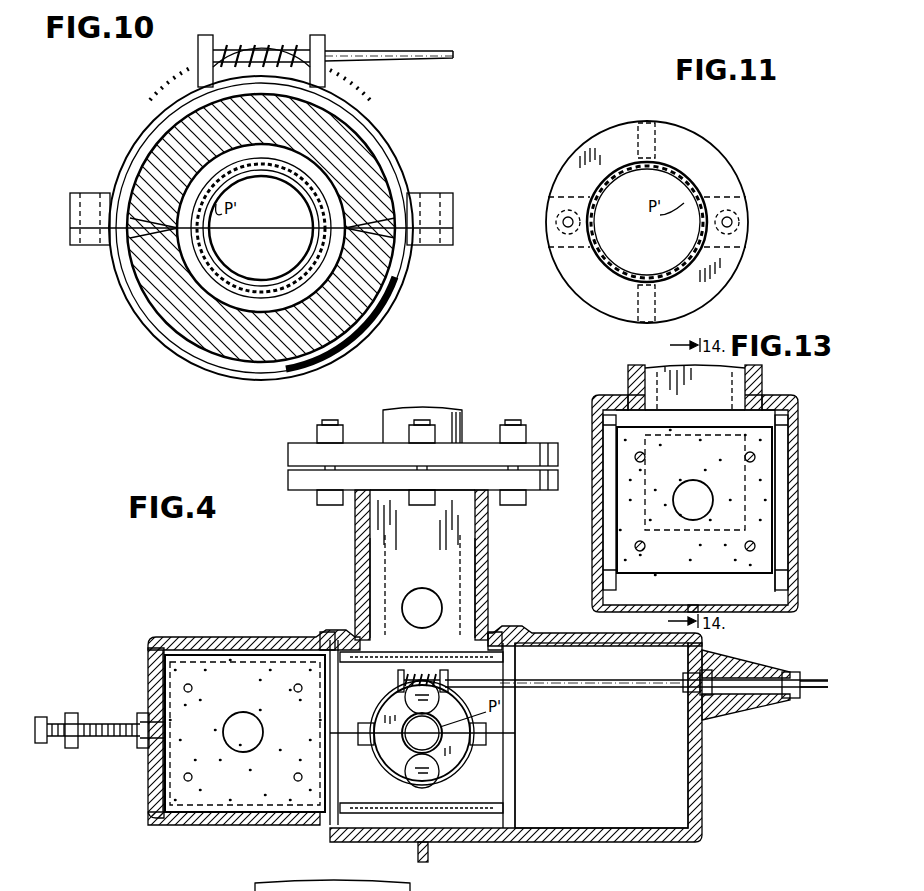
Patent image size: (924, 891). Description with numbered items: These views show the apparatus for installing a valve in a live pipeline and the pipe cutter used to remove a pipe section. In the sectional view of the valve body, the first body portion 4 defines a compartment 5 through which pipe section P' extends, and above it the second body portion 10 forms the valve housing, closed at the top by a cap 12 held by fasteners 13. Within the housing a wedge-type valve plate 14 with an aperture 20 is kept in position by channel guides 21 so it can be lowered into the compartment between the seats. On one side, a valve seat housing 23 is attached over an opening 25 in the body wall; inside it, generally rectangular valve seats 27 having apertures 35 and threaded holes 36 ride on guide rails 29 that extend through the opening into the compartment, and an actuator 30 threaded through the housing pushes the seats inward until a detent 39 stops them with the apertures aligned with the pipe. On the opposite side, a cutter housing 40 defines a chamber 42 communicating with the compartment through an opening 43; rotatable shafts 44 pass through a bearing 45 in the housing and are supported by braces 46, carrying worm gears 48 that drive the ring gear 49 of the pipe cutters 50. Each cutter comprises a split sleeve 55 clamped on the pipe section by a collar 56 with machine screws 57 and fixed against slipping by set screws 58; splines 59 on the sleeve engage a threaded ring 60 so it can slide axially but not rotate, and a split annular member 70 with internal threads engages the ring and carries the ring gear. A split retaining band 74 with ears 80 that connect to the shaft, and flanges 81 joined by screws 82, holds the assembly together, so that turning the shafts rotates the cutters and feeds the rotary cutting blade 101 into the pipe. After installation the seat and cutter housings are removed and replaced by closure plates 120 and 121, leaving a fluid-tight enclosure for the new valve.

In FIG. 13, the first body portion 4 is at (762, 381).
In FIG. 4, the first body portion 4 is at (520, 632).
In FIG. 4, the compartment 5 is at (478, 784).
In FIG. 4, the second body portion 10 is at (488, 578).
In FIG. 4, the cap 12 is at (462, 413).
In FIG. 4, the fasteners 13 is at (309, 430).
In FIG. 13, the valve plate 14 is at (716, 408).
In FIG. 4, the valve plate 14 is at (428, 547).
In FIG. 4, the aperture 20 is at (423, 591).
In FIG. 4, the channel guides 21 is at (380, 568).
In FIG. 4, the valve seat housing 23 is at (290, 637).
In FIG. 13, the opening 25 is at (610, 435).
In FIG. 4, the opening 25 is at (333, 786).
In FIG. 13, the valve seats 27 is at (708, 556).
In FIG. 4, the valve seats 27 is at (244, 696).
In FIG. 4, the guide rails 29 is at (325, 632).
In FIG. 4, the actuator 30 is at (41, 715).
In FIG. 13, the apertures 35 is at (698, 483).
In FIG. 4, the apertures 35 is at (262, 723).
In FIG. 13, the threaded holes 36 is at (646, 458).
In FIG. 4, the threaded holes 36 is at (192, 777).
In FIG. 4, the detent 39 is at (75, 712).
In FIG. 4, the cutter housing 40 is at (703, 798).
In FIG. 4, the chamber 42 is at (640, 790).
In FIG. 13, the opening 43 is at (779, 512).
In FIG. 4, the opening 43 is at (508, 784).
In FIG. 10, the rotatable shafts 44 is at (402, 48).
In FIG. 4, the rotatable shafts 44 is at (604, 681).
In FIG. 4, the bearing 45 is at (683, 690).
In FIG. 4, the braces 46 is at (768, 660).
In FIG. 10, the worm gears 48 is at (276, 44).
In FIG. 10, the ring gear 49 is at (180, 76).
In FIG. 4, the pipe cutters 50 is at (382, 684).
In FIG. 10, the split sleeve 55 is at (370, 300).
In FIG. 11, the collar 56 is at (730, 150).
In FIG. 11, the machine screws 57 is at (735, 222).
In FIG. 11, the set screws 58 is at (647, 119).
In FIG. 10, the splines 59 is at (162, 325).
In FIG. 10, the threaded ring 60 is at (175, 264).
In FIG. 10, the split annular member 70 is at (345, 178).
In FIG. 10, the retaining band 74 is at (370, 126).
In FIG. 10, the ears 80 is at (322, 33).
In FIG. 10, the flanges 81 is at (455, 210).
In FIG. 10, the screws 82 is at (437, 192).
In FIG. 4, the pipe cutting blade 101 is at (412, 698).
In FIG. 13, the plate 120 is at (592, 548).
In FIG. 13, the plate 121 is at (798, 452).